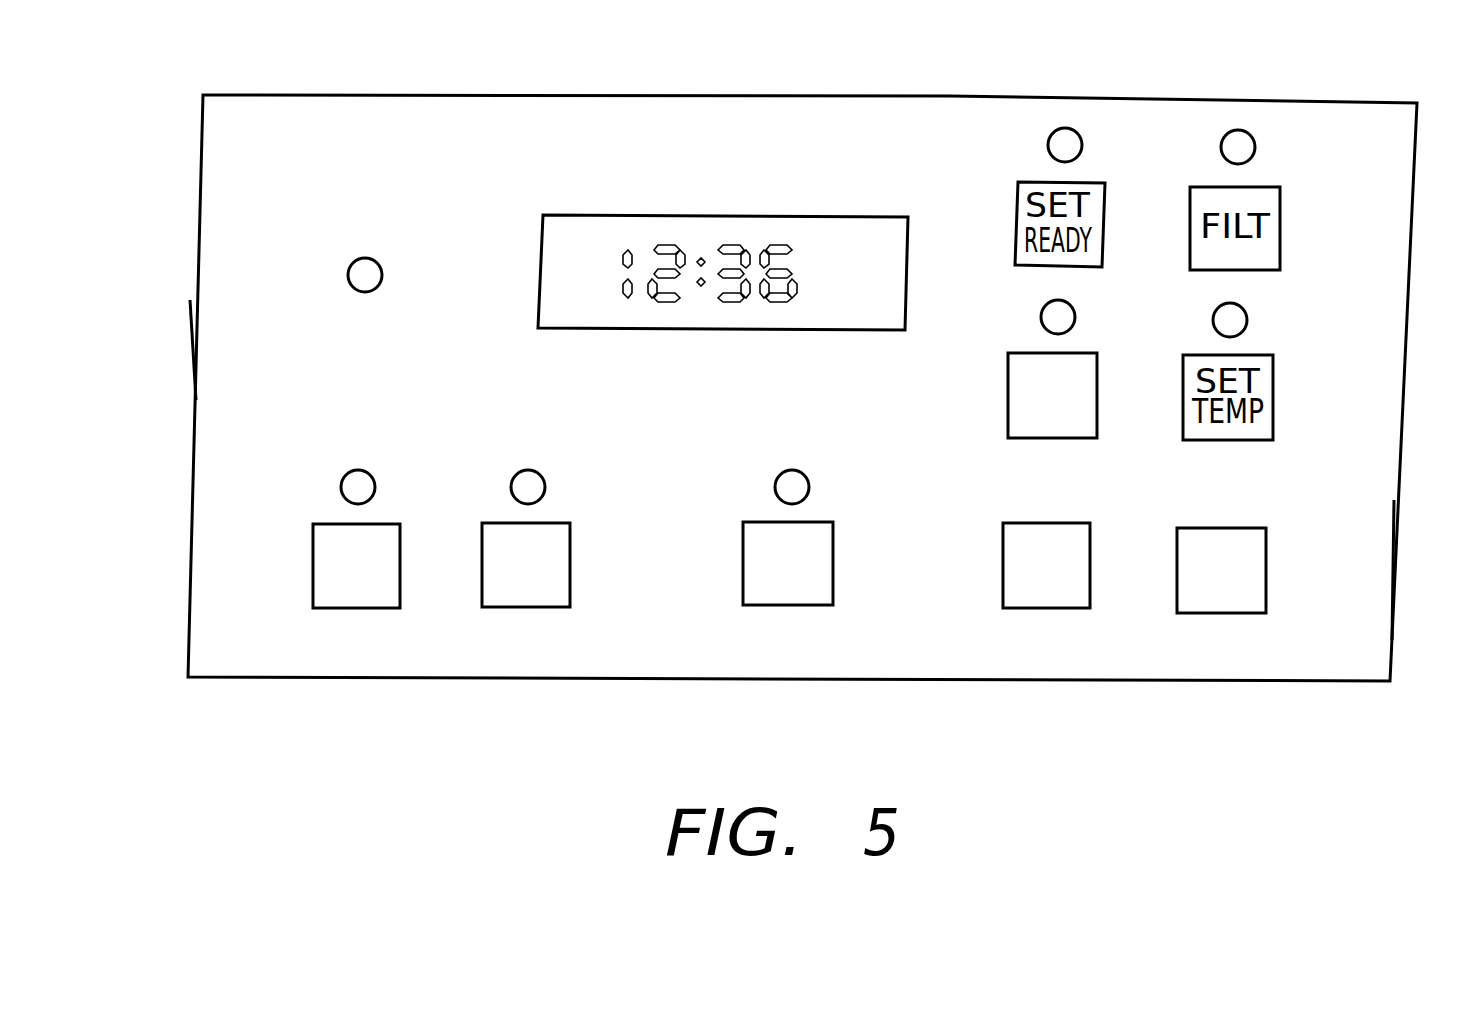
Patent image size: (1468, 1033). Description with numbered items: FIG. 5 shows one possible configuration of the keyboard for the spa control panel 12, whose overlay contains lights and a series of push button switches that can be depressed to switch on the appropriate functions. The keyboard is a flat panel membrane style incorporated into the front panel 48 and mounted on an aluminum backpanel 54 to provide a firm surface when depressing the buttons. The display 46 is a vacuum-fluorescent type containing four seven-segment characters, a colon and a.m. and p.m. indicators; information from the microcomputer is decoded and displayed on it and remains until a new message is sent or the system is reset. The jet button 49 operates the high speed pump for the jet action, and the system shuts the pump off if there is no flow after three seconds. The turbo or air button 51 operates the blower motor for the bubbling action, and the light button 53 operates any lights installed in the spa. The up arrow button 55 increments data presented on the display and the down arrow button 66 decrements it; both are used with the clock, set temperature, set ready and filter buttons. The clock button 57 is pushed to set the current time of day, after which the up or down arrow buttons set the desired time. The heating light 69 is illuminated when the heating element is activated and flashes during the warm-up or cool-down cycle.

The spa control panel 12 is at (950, 95).
The control panel housing 54 is at (195, 396).
The control panel face 48 is at (1370, 576).
The heating indicator light 69 is at (346, 275).
The clock display 46 is at (540, 272).
The set clock button 57 is at (1050, 425).
The jet button 49 is at (343, 590).
The air button 51 is at (510, 588).
The light button 53 is at (773, 588).
The up button 55 is at (1032, 590).
The down button 66 is at (1207, 595).